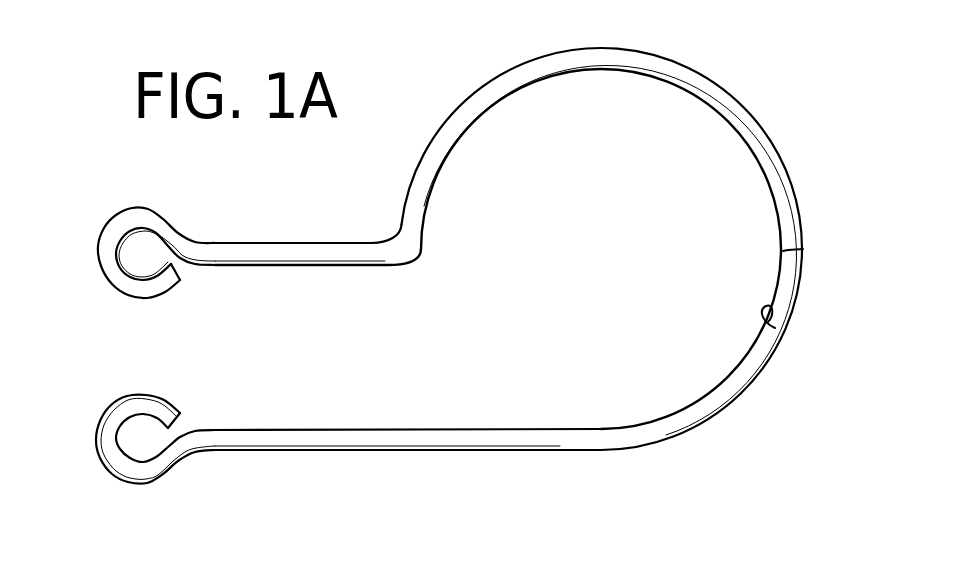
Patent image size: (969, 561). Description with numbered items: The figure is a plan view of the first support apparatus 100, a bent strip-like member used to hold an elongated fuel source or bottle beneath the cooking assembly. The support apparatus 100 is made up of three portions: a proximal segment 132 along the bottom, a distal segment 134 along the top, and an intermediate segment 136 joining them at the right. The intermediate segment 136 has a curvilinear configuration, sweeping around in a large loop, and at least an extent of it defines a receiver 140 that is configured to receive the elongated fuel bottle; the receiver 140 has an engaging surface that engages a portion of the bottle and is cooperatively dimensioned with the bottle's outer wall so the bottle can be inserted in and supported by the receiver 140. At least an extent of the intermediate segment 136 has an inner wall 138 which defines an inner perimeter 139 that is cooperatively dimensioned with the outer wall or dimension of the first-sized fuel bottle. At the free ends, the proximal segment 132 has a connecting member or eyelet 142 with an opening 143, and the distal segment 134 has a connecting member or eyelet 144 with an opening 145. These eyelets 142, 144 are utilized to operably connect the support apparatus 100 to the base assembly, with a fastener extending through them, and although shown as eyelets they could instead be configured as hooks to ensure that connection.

The first support apparatus 100 is at (718, 66).
The proximal segment 132 is at (373, 441).
The distal segment 134 is at (282, 254).
The intermediate segment 136 is at (787, 196).
The inner wall 138 is at (785, 250).
The inner perimeter 139 is at (775, 328).
The receiver 140 is at (702, 152).
The eyelet 142 is at (140, 437).
The opening 143 is at (142, 430).
The eyelet 144 is at (131, 251).
The opening 145 is at (143, 252).